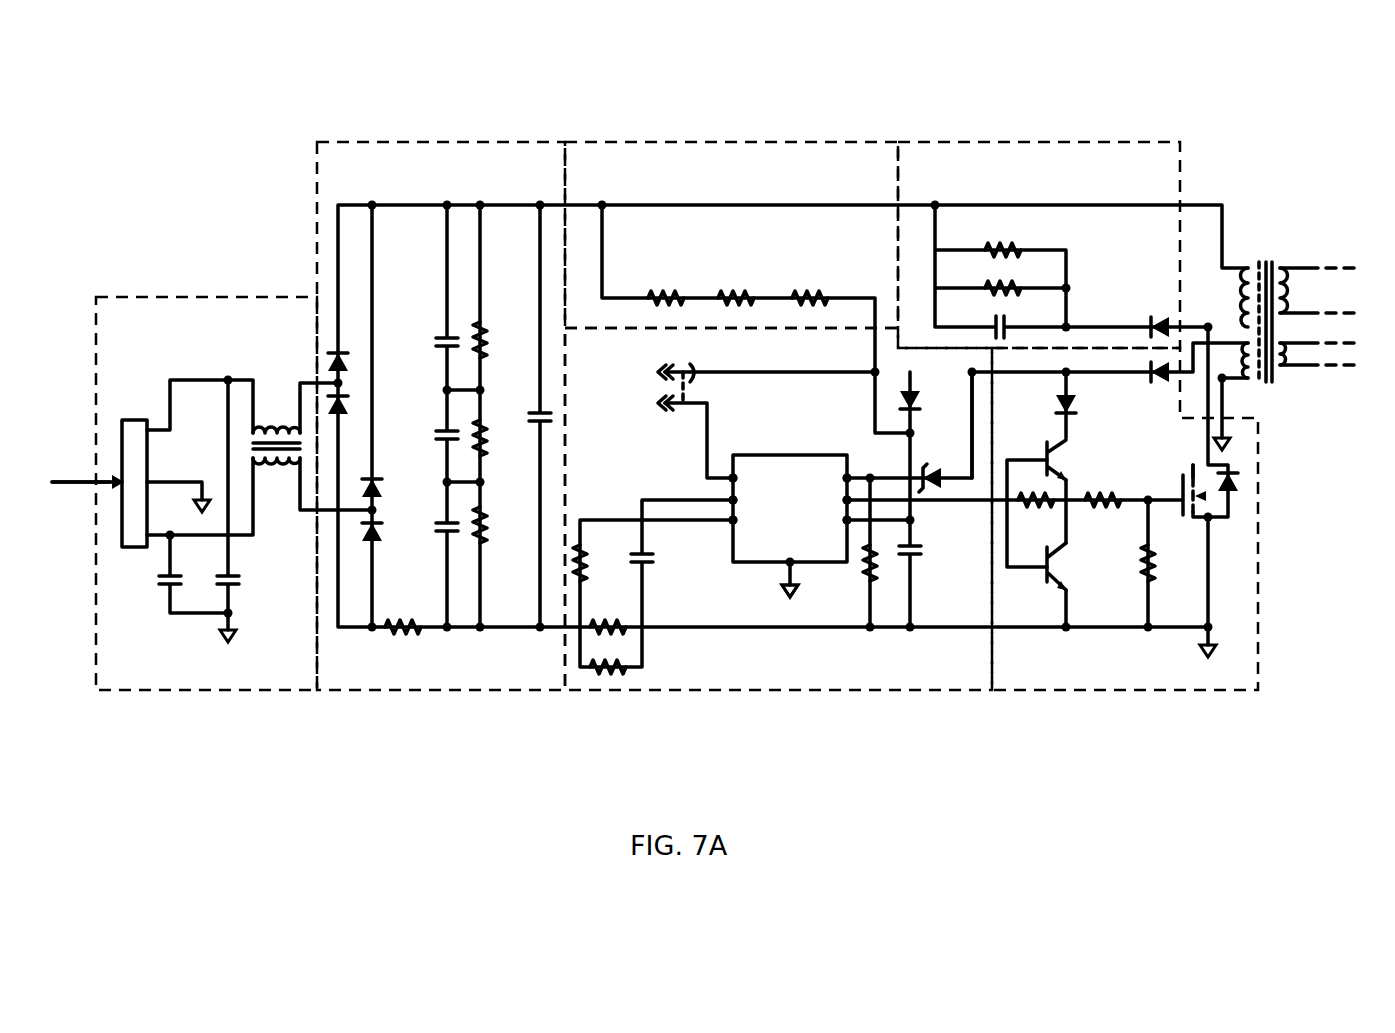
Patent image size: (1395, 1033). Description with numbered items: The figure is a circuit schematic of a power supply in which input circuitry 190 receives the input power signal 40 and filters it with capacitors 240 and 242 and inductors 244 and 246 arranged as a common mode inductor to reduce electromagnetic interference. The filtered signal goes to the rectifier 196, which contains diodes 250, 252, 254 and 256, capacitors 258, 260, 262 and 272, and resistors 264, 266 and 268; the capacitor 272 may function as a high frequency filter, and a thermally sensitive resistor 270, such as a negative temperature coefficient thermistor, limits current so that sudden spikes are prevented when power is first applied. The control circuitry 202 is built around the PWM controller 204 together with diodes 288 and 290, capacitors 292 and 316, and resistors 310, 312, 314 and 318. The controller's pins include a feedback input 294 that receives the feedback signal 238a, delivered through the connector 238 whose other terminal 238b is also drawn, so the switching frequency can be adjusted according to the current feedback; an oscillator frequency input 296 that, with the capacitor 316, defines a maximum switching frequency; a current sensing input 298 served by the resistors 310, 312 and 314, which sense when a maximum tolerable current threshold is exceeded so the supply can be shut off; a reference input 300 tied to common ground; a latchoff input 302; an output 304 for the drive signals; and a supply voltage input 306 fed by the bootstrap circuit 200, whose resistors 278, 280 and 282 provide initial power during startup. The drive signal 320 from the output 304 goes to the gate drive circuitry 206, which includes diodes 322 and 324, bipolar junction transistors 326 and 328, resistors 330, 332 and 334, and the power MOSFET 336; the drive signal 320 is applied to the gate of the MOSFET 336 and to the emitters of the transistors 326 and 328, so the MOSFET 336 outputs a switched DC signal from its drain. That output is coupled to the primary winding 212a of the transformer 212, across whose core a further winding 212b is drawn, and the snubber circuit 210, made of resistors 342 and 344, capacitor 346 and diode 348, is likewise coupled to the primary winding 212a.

The input power signal 40 is at (62, 482).
The input circuitry 190 is at (205, 297).
The rectifier 196 is at (447, 142).
The bootstrap circuit 200 is at (735, 142).
The control circuitry 202 is at (680, 690).
The PWM controller 204 is at (790, 455).
The gate drive circuitry 206 is at (1118, 690).
The snubber circuit 210 is at (1050, 142).
The transformer 212 is at (1306, 261).
The primary winding 212a is at (1248, 262).
The transformer secondary windings 212b is at (1288, 255).
The connector 238 is at (688, 366).
The feedback signal 238a is at (707, 430).
The connector terminal 238b is at (775, 372).
The capacitor 240 is at (166, 588).
The capacitor 242 is at (234, 586).
The inductor 244 is at (272, 430).
The inductor 246 is at (272, 465).
The diode 250 is at (338, 352).
The diode 252 is at (346, 396).
The diode 254 is at (380, 488).
The diode 256 is at (378, 542).
The capacitor 258 is at (445, 338).
The capacitor 260 is at (445, 434).
The capacitor 262 is at (445, 530).
The resistor 264 is at (486, 332).
The resistor 266 is at (486, 437).
The resistor 268 is at (486, 520).
The thermally sensitive resistor 270 is at (404, 630).
The capacitor 272 is at (540, 424).
The resistor 278 is at (668, 298).
The resistor 280 is at (748, 298).
The resistor 282 is at (815, 298).
The diode 288 is at (902, 400).
The diode 290 is at (933, 468).
The capacitor 292 is at (916, 556).
The feedback input 294 is at (731, 476).
The oscillator frequency input 296 is at (731, 500).
The current sensing input 298 is at (735, 524).
The reference input 300 is at (793, 568).
The latchoff input 302 is at (846, 476).
The output 304 is at (845, 500).
The supply voltage input 306 is at (845, 520).
The resistor 310 is at (605, 669).
The resistor 312 is at (610, 625).
The resistor 314 is at (580, 545).
The capacitor 316 is at (648, 562).
The resistor 318 is at (875, 583).
The drive signal 320 is at (945, 488).
The diode 322 is at (1055, 410).
The diode 324 is at (1158, 384).
The bipolar junction transistor 326 is at (1056, 446).
The bipolar junction transistor 328 is at (1045, 575).
The resistor 330 is at (1035, 507).
The resistor 332 is at (1100, 507).
The resistor 334 is at (1145, 565).
The power MOSFET 336 is at (1198, 525).
The resistor 342 is at (1012, 245).
The resistor 344 is at (1025, 283).
The capacitor 346 is at (1008, 320).
The diode 348 is at (1160, 320).